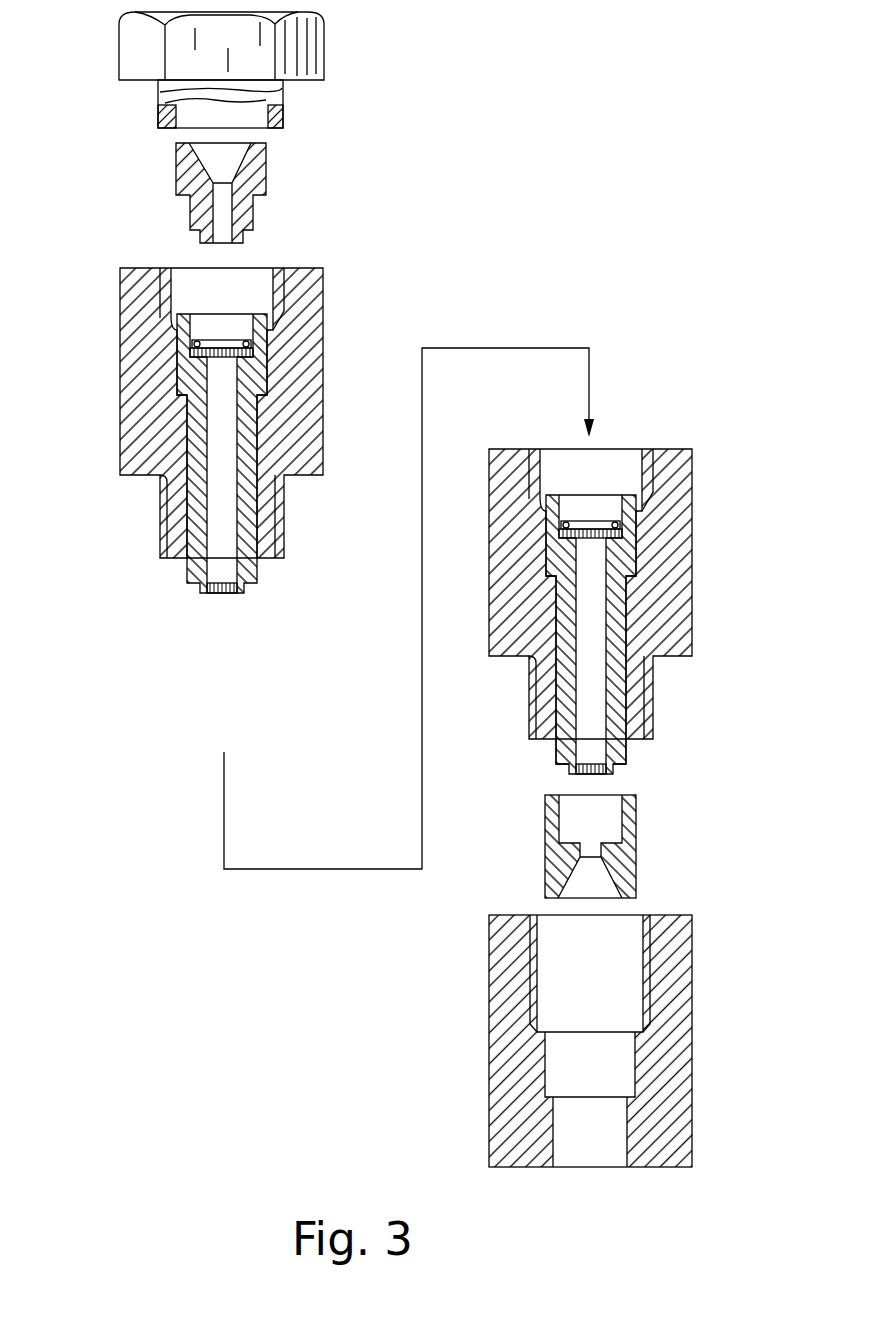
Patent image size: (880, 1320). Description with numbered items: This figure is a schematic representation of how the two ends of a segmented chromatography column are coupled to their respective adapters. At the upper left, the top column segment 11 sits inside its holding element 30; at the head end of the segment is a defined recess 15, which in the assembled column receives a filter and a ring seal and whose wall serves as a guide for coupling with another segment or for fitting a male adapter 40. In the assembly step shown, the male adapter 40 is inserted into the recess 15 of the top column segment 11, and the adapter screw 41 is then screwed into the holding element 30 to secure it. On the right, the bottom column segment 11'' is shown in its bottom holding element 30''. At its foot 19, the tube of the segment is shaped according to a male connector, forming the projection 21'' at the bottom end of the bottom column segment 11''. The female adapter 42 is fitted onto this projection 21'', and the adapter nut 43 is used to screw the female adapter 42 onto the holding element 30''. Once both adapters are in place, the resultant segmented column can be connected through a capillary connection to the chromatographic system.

The adapter screw 41 is at (334, 44).
The male adapter 40 is at (270, 214).
The holding element 30 is at (178, 405).
The recess 15 is at (252, 333).
The top column segment 11 is at (285, 453).
The bottom holding element 30'' is at (649, 594).
The bottom column segment 11'' is at (663, 634).
The foot 19 is at (542, 754).
The projection 21'' is at (651, 778).
The female adapter 42 is at (637, 850).
The adapter nut 43 is at (693, 1003).